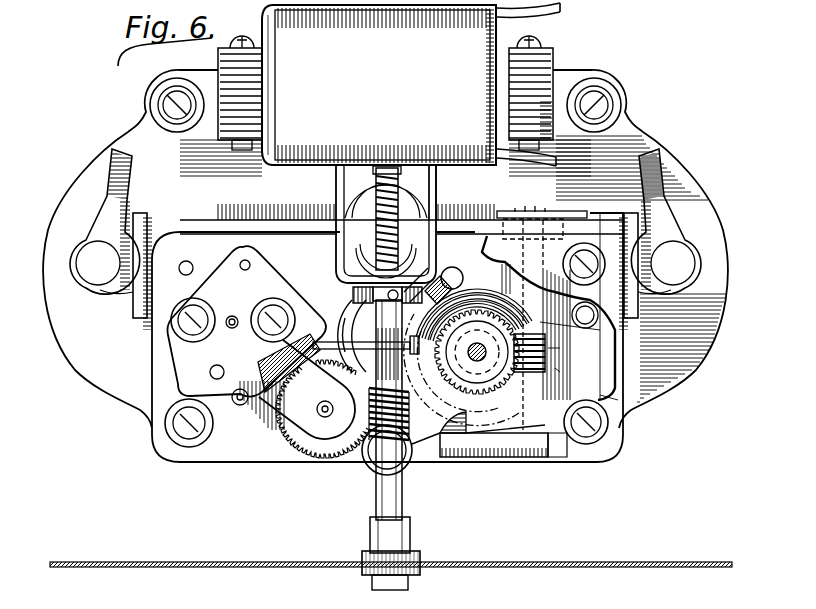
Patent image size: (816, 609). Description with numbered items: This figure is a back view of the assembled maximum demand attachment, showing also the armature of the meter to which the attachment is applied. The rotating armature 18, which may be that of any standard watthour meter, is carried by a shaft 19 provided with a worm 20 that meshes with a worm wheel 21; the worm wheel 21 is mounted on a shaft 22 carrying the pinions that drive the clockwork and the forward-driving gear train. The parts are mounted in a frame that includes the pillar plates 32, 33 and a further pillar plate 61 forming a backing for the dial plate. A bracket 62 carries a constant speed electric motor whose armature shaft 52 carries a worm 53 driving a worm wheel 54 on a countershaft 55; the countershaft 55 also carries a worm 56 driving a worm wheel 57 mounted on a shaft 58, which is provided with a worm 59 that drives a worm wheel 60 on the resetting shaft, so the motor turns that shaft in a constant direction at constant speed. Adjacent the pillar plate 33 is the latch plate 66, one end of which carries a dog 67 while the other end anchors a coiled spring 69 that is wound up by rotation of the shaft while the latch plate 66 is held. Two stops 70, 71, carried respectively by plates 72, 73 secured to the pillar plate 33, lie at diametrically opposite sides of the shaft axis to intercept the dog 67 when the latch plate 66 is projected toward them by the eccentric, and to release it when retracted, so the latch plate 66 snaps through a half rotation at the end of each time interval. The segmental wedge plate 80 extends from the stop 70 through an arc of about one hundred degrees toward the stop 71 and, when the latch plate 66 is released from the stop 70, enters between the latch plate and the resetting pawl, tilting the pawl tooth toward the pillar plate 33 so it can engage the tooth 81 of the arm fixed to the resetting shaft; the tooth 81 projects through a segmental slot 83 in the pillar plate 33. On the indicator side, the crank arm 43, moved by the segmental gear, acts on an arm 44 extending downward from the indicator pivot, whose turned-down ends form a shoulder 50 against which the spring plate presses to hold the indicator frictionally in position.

The rotating armature 18 is at (690, 556).
The armature shaft 19 is at (404, 516).
The worm 20 is at (428, 448).
The worm wheel 21 is at (312, 458).
The shaft 22 is at (318, 416).
The pillar plate 32 is at (618, 429).
The pillar plate 33 is at (240, 457).
The crank arm 43 is at (376, 505).
The arm 44 is at (400, 519).
The shoulder 50 is at (477, 352).
The armature shaft 52 is at (360, 172).
The worm 53 is at (373, 238).
The worm wheel 54 is at (437, 210).
The countershaft 55 is at (452, 224).
The worm 56 is at (534, 216).
The worm wheel 57 is at (566, 216).
The shaft 58 is at (592, 228).
The worm 59 is at (560, 356).
The worm wheel 60 is at (540, 322).
The pillar plate 61 is at (548, 348).
The bracket 62 is at (552, 48).
The latch plate 66 is at (555, 368).
The dog 67 is at (436, 280).
The coiled spring 69 is at (470, 312).
The stop 70 is at (573, 462).
The stop 71 is at (396, 284).
The plate 72 is at (620, 404).
The plate 73 is at (346, 320).
The wedge plate 80 is at (482, 452).
The tooth 81 is at (456, 279).
The segmental slot 83 is at (546, 325).